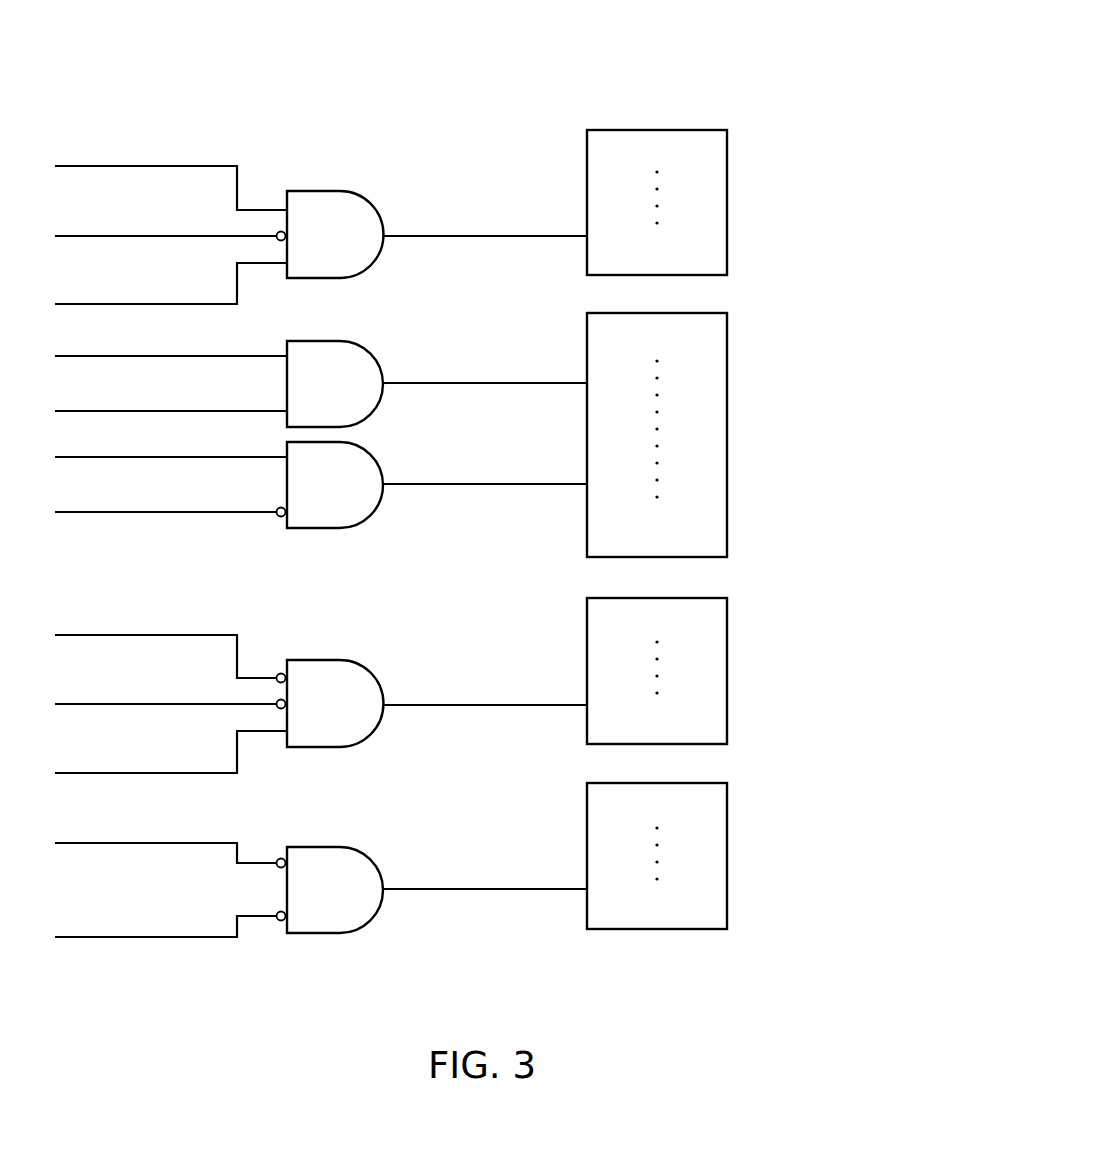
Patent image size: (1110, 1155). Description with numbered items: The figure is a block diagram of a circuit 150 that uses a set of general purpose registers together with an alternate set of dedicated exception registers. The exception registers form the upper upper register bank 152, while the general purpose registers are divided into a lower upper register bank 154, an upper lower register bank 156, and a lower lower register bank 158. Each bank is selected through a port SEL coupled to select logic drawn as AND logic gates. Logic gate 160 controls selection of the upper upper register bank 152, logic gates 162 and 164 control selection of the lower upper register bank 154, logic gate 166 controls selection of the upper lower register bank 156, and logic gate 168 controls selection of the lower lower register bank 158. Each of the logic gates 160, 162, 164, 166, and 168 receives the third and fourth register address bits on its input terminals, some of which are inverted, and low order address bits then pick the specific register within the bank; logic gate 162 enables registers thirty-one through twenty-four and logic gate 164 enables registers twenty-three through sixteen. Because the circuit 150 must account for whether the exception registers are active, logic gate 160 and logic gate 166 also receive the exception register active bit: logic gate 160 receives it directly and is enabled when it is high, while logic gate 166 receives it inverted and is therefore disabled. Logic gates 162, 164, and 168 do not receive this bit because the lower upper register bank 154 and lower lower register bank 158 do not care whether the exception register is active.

The circuit 150 is at (690, 69).
The upper upper register bank 152 is at (727, 131).
The lower upper register bank 154 is at (727, 314).
The upper lower register bank 156 is at (727, 600).
The lower lower register bank 158 is at (727, 785).
The logic gate 160 is at (365, 199).
The logic gate 162 is at (365, 349).
The logic gate 164 is at (365, 450).
The logic gate 166 is at (365, 669).
The logic gate 168 is at (365, 855).